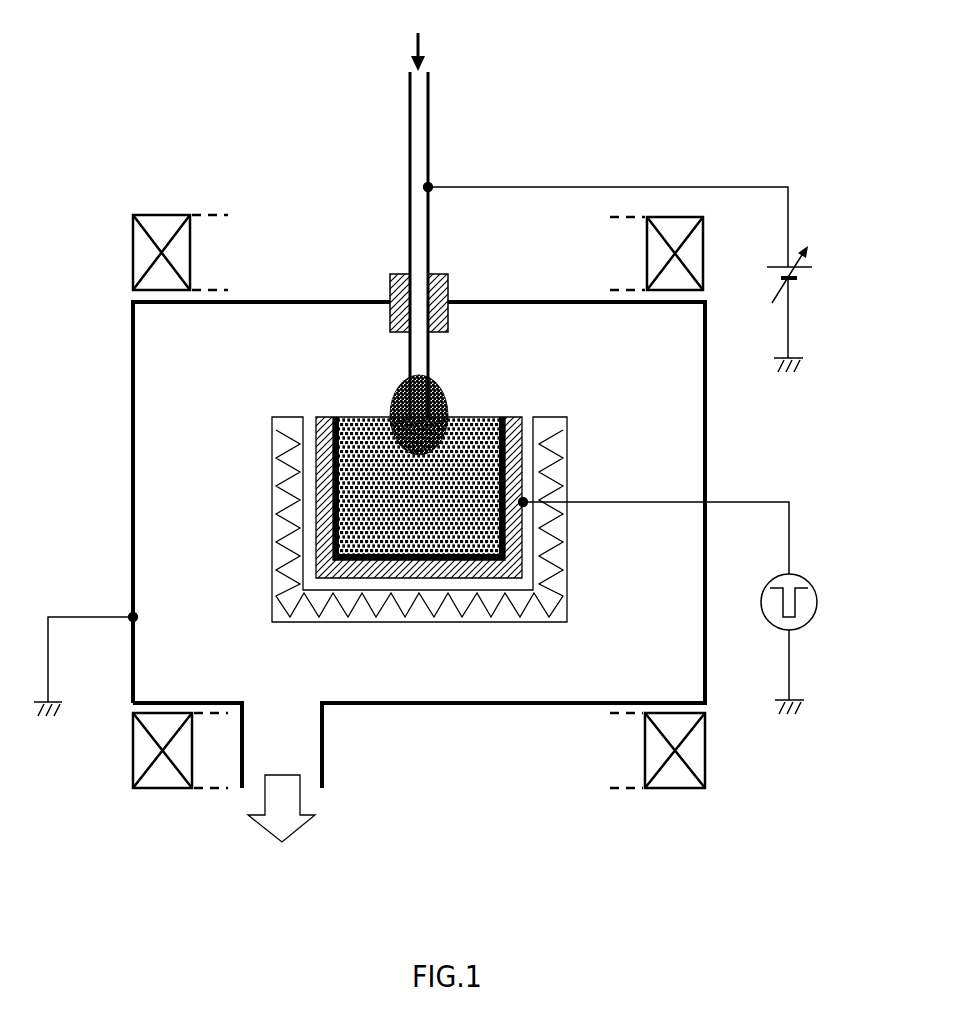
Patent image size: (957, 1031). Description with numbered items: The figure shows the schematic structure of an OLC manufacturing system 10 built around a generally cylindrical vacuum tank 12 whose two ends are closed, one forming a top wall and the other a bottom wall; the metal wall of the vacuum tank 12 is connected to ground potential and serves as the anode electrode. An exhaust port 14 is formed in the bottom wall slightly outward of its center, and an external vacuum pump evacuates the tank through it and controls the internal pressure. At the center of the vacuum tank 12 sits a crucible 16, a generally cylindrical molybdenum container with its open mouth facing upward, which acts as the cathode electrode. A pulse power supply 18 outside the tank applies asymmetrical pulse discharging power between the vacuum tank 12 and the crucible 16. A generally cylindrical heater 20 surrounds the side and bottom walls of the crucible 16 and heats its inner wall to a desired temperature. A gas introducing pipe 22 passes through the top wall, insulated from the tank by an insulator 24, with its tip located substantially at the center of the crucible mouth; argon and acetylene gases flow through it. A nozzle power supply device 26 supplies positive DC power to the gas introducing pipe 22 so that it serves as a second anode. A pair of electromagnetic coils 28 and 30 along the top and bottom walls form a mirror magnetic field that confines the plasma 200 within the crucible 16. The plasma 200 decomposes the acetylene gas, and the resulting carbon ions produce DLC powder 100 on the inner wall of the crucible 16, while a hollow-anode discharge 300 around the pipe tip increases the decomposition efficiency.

The OLC manufacturing system 10 is at (289, 143).
The vacuum tank 12 is at (133, 504).
The exhaust port 14 is at (324, 743).
The crucible 16 is at (411, 469).
The pulse power supply 18 is at (818, 601).
The heater 20 is at (422, 622).
The gas introducing pipe 22 is at (430, 128).
The insulator 24 is at (390, 290).
The nozzle power supply device 26 is at (814, 272).
The electromagnetic coil 28 is at (133, 254).
The electromagnetic coil 30 is at (133, 752).
The DLC powder 100 is at (340, 446).
The plasma 200 is at (470, 436).
The hollow-anode discharge 300 is at (437, 398).